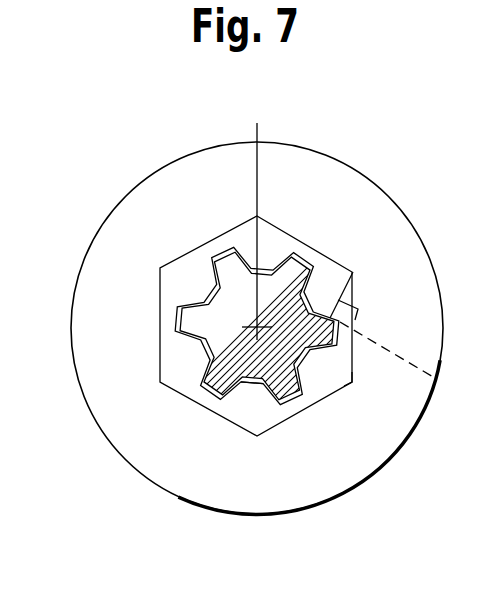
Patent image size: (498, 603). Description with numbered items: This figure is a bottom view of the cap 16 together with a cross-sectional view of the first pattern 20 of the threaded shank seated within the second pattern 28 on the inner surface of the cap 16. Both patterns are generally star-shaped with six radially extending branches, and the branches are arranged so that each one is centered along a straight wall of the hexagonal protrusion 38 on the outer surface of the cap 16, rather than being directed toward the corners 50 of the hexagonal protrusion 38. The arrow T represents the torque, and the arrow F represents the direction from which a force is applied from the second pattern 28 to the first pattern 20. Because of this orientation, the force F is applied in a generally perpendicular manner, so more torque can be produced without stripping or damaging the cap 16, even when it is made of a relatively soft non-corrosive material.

The cap 16 is at (355, 164).
The first pattern 20 is at (228, 364).
The second pattern 28 is at (262, 383).
The hexagonal protrusion 38 is at (325, 400).
The corners 50 is at (352, 382).
The force F is at (353, 272).
The torque T is at (60, 245).